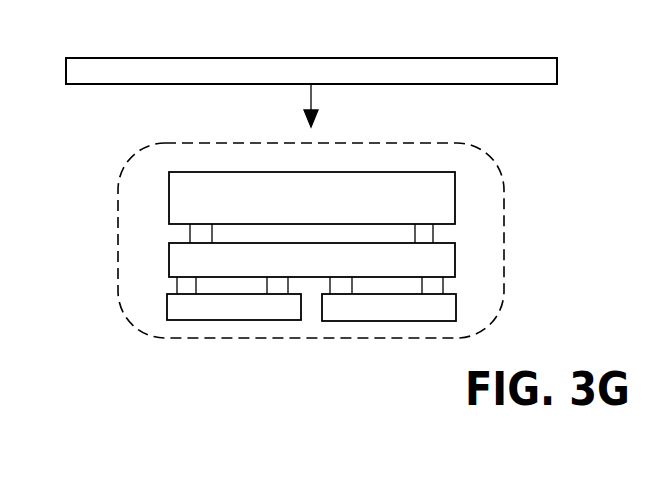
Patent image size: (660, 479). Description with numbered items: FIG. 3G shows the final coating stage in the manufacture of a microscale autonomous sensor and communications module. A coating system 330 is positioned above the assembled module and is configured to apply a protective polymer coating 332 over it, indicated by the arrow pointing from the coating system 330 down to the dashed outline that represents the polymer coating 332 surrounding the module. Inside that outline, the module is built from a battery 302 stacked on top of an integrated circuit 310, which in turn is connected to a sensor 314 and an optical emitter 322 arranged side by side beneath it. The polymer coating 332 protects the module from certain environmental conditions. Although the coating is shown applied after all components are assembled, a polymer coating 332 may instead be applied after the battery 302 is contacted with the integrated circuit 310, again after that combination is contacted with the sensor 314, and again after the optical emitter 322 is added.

The coating system 330 is at (503, 58).
The protective polymer coating 332 is at (400, 143).
The battery 302 is at (455, 193).
The integrated circuit 310 is at (455, 258).
The sensor 314 is at (215, 320).
The optical emitter 322 is at (362, 321).